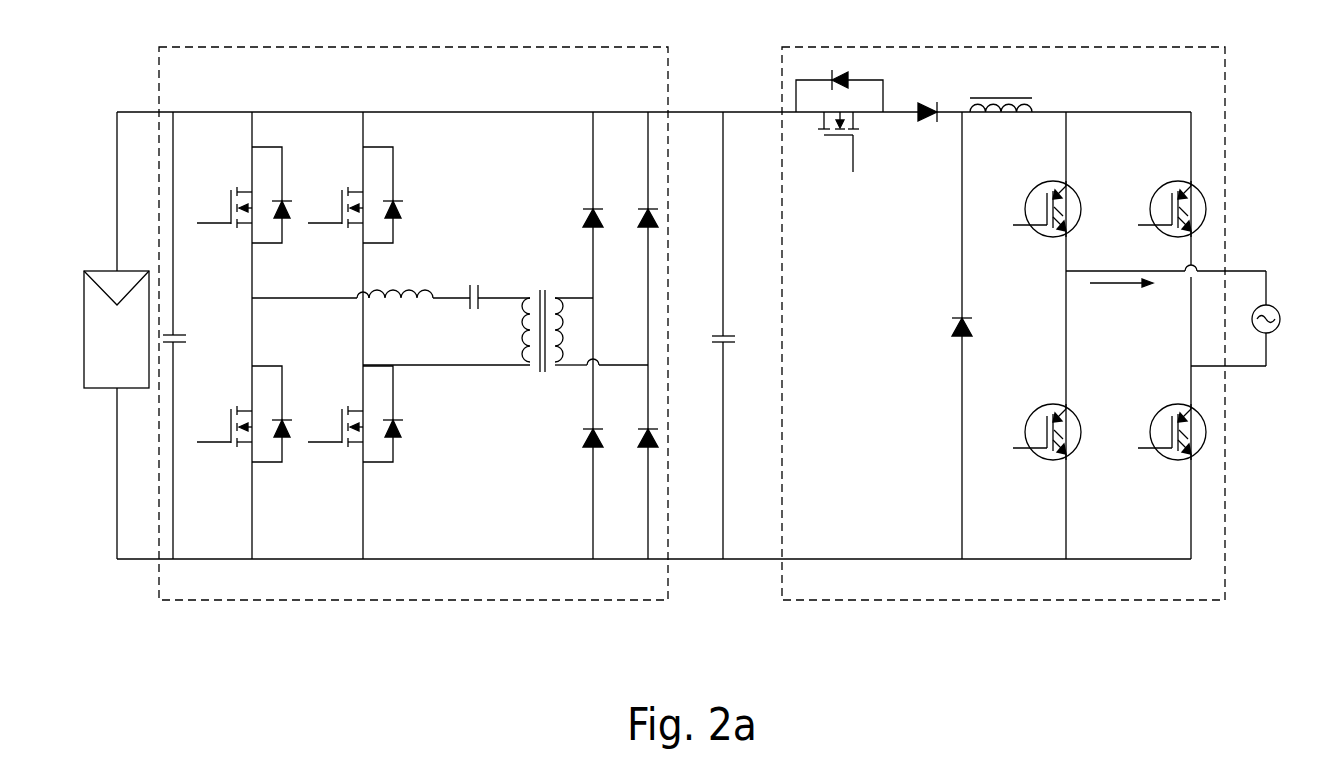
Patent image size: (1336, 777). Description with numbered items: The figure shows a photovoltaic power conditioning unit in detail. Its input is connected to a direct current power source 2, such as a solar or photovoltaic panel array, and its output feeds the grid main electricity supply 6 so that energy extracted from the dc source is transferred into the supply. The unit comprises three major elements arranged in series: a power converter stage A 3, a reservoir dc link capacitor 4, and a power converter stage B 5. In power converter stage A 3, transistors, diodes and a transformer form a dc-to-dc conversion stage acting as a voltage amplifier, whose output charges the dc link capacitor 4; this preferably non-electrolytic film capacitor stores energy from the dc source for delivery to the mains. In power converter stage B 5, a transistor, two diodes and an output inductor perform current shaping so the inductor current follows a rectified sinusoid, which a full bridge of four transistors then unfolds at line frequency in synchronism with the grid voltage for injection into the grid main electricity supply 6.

The direct current (dc) power source 2 is at (87, 415).
The power converter stage A 3 is at (182, 608).
The reservoir (dc link) capacitor 4 is at (709, 588).
The power converter stage B 5 is at (808, 609).
The grid main electricity supply 6 is at (1265, 392).